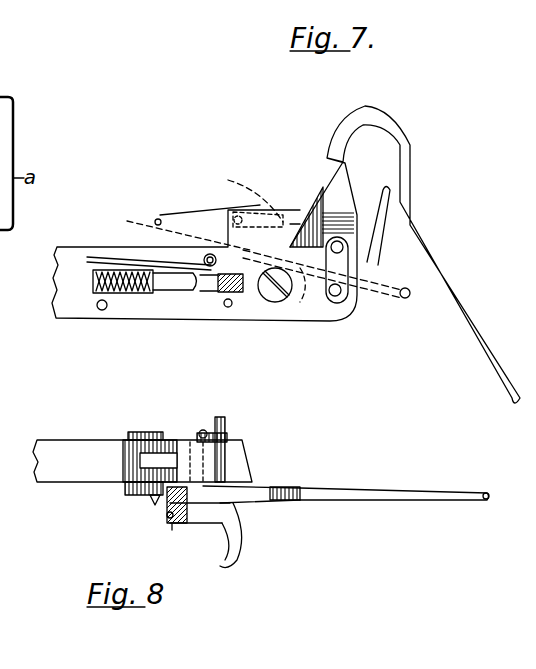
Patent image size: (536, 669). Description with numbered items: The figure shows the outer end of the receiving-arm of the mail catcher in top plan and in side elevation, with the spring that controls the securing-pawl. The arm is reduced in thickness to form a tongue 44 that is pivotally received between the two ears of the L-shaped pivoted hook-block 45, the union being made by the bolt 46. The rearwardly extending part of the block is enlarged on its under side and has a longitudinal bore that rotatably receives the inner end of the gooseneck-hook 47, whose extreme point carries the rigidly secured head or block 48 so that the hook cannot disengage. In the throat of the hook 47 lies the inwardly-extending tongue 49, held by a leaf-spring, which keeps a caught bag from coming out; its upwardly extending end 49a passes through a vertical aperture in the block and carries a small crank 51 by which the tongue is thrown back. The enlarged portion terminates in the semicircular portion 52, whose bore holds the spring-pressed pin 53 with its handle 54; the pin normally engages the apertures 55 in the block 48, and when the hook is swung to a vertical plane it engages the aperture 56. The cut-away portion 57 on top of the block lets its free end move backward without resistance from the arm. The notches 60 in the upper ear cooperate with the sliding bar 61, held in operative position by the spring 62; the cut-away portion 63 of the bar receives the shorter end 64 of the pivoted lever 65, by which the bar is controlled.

In FIG. 8, the tongue 44 is at (144, 462).
In FIG. 7, the pivoted hook-block 45 is at (313, 180).
In FIG. 8, the pivoted hook-block 45 is at (243, 470).
In FIG. 7, the bolt 46 is at (274, 302).
In FIG. 8, the bolt 46 is at (140, 432).
In FIG. 7, the gooseneck-hook 47 is at (472, 312).
In FIG. 8, the gooseneck-hook 47 is at (408, 495).
In FIG. 8, the head or block 48 is at (168, 500).
In FIG. 7, the tongue 49 is at (364, 252).
In FIG. 8, the tongue 49 is at (251, 482).
In FIG. 8, the upwardly extending end 49a is at (205, 430).
In FIG. 7, the crank 51 is at (250, 216).
In FIG. 8, the crank 51 is at (225, 422).
In FIG. 8, the semicircular portion 52 is at (207, 514).
In FIG. 8, the pin 53 is at (173, 526).
In FIG. 8, the handle 54 is at (235, 556).
In FIG. 8, the apertures 55 is at (170, 518).
In FIG. 8, the aperture 56 is at (152, 500).
In FIG. 7, the cut-away portion 57 is at (297, 223).
In FIG. 7, the notches 60 is at (232, 250).
In FIG. 7, the sliding bar 61 is at (178, 291).
In FIG. 7, the spring 62 is at (120, 293).
In FIG. 7, the cut-away portion 63 is at (194, 257).
In FIG. 7, the shorter end 64 is at (208, 292).
In FIG. 7, the pivoted lever 65 is at (102, 257).